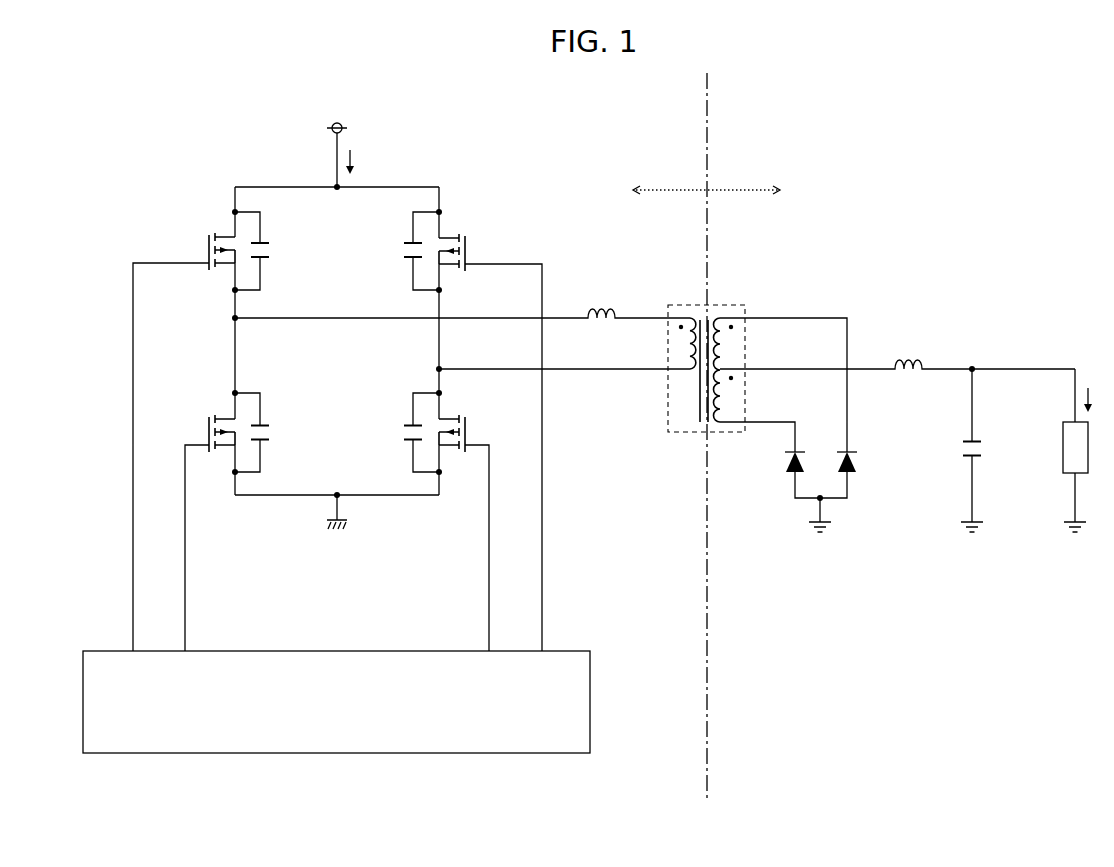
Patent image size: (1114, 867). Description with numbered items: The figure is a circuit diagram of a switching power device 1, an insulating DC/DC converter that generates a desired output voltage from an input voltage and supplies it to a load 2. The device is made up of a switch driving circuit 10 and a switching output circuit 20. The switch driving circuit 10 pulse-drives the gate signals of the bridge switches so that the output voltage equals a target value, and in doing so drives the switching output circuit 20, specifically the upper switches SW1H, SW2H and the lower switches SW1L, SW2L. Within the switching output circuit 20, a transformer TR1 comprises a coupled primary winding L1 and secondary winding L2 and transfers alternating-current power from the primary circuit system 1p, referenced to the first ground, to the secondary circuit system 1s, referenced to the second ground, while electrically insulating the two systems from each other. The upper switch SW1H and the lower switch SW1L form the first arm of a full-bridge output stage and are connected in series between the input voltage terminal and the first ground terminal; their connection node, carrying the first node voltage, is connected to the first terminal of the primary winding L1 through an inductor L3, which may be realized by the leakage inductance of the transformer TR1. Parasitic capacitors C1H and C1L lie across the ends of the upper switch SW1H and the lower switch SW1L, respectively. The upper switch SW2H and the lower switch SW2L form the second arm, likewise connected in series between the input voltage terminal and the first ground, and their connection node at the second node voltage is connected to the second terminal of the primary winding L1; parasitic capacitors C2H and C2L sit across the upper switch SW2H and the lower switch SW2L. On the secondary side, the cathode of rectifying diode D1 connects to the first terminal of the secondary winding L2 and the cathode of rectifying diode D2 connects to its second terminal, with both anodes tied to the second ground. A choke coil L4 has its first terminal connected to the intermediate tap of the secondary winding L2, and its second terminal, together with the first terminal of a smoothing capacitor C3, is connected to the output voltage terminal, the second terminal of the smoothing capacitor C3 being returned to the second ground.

The switching power device 1 is at (974, 150).
The load 2 is at (1089, 455).
The switch driving circuit 10 is at (340, 649).
The switching output circuit 20 is at (106, 146).
The primary circuit system 1p is at (652, 192).
The secondary circuit system 1s is at (761, 192).
The upper switch SW1H is at (214, 233).
The upper switch SW2H is at (461, 233).
The lower switch SW1L is at (214, 414).
The lower switch SW2L is at (461, 414).
The parasitic capacitor C1H is at (268, 261).
The parasitic capacitor C2H is at (405, 261).
The parasitic capacitor C1L is at (268, 443).
The parasitic capacitor C2L is at (405, 443).
The primary winding L1 is at (680, 346).
The secondary winding L2 is at (735, 346).
The inductor L3 is at (602, 306).
The choke coil L4 is at (907, 360).
The transformer TR1 is at (722, 306).
The rectifying diode D1 is at (787, 458).
The rectifying diode D2 is at (857, 458).
The smoothing capacitor C3 is at (987, 449).